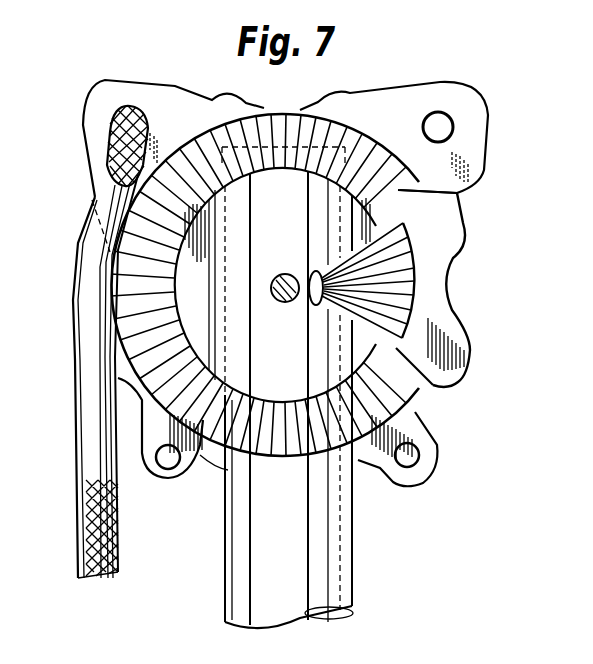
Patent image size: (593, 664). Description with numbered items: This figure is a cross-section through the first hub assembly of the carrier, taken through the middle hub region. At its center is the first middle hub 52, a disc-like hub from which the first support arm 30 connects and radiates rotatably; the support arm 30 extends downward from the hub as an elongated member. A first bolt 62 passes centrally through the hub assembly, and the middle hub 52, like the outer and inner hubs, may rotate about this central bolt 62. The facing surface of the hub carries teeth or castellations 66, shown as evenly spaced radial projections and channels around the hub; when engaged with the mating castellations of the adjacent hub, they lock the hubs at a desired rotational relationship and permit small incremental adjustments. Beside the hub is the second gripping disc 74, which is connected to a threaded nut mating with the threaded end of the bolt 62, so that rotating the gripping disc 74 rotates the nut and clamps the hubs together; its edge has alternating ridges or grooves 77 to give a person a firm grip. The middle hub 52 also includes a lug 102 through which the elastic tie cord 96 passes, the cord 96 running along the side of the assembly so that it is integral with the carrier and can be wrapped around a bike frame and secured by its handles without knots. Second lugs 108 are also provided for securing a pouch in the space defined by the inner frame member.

The first support arm 30 is at (223, 584).
The first middle hub 52 is at (289, 110).
The first bolt 62 is at (282, 308).
The castellations 66 is at (334, 127).
The second gripping disc 74 is at (468, 212).
The ridges or grooves 77 is at (449, 284).
The elastic tie cord 96 is at (76, 416).
The lug 102 is at (96, 84).
The second lugs 108 is at (177, 478).